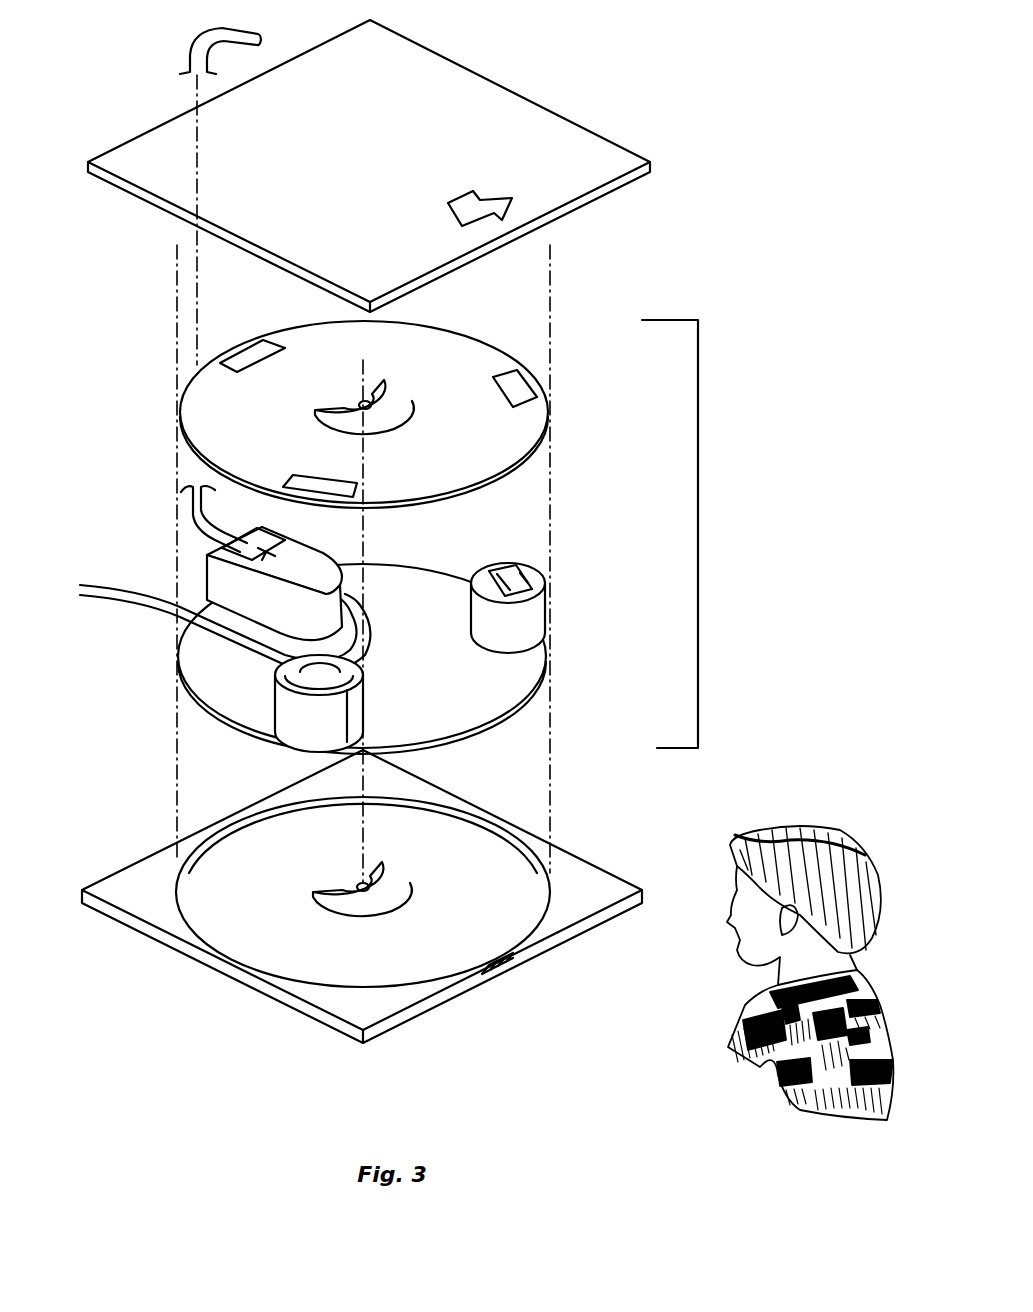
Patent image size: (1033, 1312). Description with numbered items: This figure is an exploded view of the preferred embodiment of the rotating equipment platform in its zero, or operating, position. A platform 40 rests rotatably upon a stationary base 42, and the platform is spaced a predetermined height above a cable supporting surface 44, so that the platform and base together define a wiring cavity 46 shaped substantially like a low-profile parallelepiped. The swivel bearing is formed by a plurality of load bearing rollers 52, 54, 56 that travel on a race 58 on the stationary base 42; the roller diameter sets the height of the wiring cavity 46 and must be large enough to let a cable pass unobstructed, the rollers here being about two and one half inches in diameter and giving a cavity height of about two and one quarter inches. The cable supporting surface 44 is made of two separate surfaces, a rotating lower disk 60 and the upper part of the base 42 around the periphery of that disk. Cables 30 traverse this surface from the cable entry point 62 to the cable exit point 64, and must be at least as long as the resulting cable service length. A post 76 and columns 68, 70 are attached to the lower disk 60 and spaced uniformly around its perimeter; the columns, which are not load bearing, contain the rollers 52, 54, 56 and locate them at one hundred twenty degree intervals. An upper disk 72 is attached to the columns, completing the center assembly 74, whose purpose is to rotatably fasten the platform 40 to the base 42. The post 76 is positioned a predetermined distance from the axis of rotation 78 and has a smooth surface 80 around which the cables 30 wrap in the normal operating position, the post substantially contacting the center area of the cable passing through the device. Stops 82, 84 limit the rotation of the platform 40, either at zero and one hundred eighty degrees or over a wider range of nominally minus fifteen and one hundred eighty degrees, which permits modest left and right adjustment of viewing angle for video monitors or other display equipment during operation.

The cables 30 is at (190, 52).
The platform 40 is at (578, 208).
The stationary base 42 is at (600, 917).
The cable supporting surface 44 is at (597, 890).
The wiring cavity 46 is at (513, 527).
The load bearing roller 52 is at (207, 553).
The load bearing roller 54 is at (533, 573).
The load bearing roller 56 is at (183, 620).
The race 58 is at (500, 857).
The lower disk 60 is at (530, 694).
The cable entry point 62 is at (193, 510).
The cable exit point 64 is at (155, 612).
The column 68 is at (525, 633).
The column 70 is at (313, 708).
The upper disk 72 is at (510, 447).
The center assembly 74 is at (716, 528).
The post 76 is at (237, 590).
The axis of rotation 78 is at (372, 652).
The smooth surface 80 is at (353, 625).
The stop 82 is at (393, 380).
The stop 84 is at (403, 867).